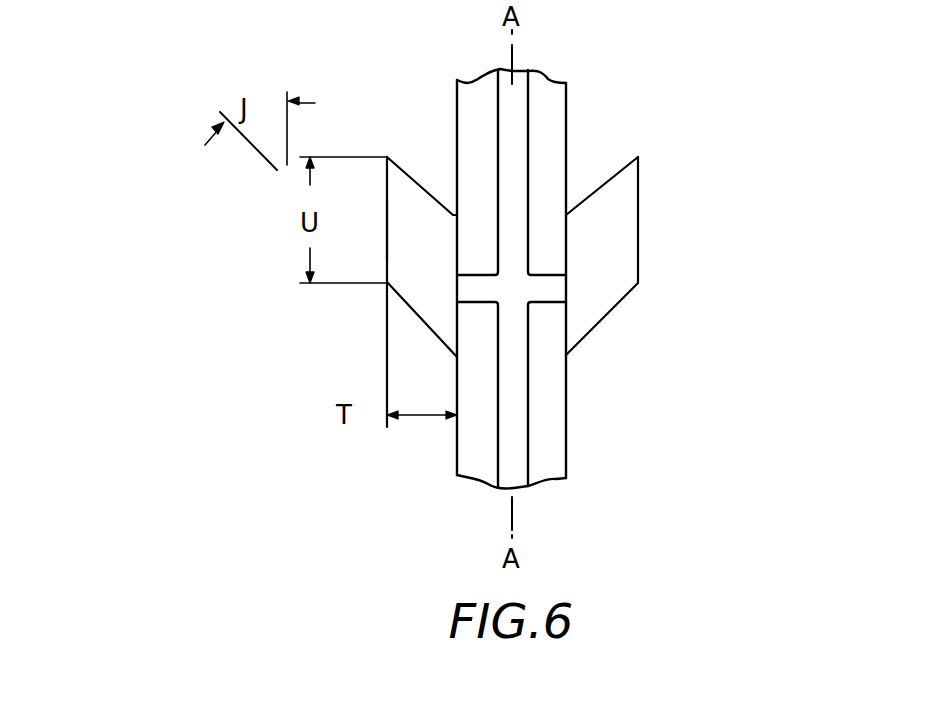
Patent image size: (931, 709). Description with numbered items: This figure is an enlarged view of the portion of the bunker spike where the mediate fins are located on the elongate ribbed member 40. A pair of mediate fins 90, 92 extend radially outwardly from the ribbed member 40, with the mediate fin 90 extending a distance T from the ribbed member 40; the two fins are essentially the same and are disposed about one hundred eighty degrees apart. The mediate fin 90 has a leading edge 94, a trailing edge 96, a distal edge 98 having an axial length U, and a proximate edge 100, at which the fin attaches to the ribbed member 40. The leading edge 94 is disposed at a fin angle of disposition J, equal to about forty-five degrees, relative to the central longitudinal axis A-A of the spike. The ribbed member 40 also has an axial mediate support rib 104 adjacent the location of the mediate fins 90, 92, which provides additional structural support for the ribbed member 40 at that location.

The elongate ribbed member 40 is at (566, 417).
The mediate fin 90 is at (387, 157).
The mediate fin 92 is at (638, 157).
The leading edge 94 is at (431, 330).
The trailing edge 96 is at (422, 186).
The distal edge 98 is at (387, 227).
The proximate edge 100 is at (457, 255).
The axial mediate support rib 104 is at (525, 293).